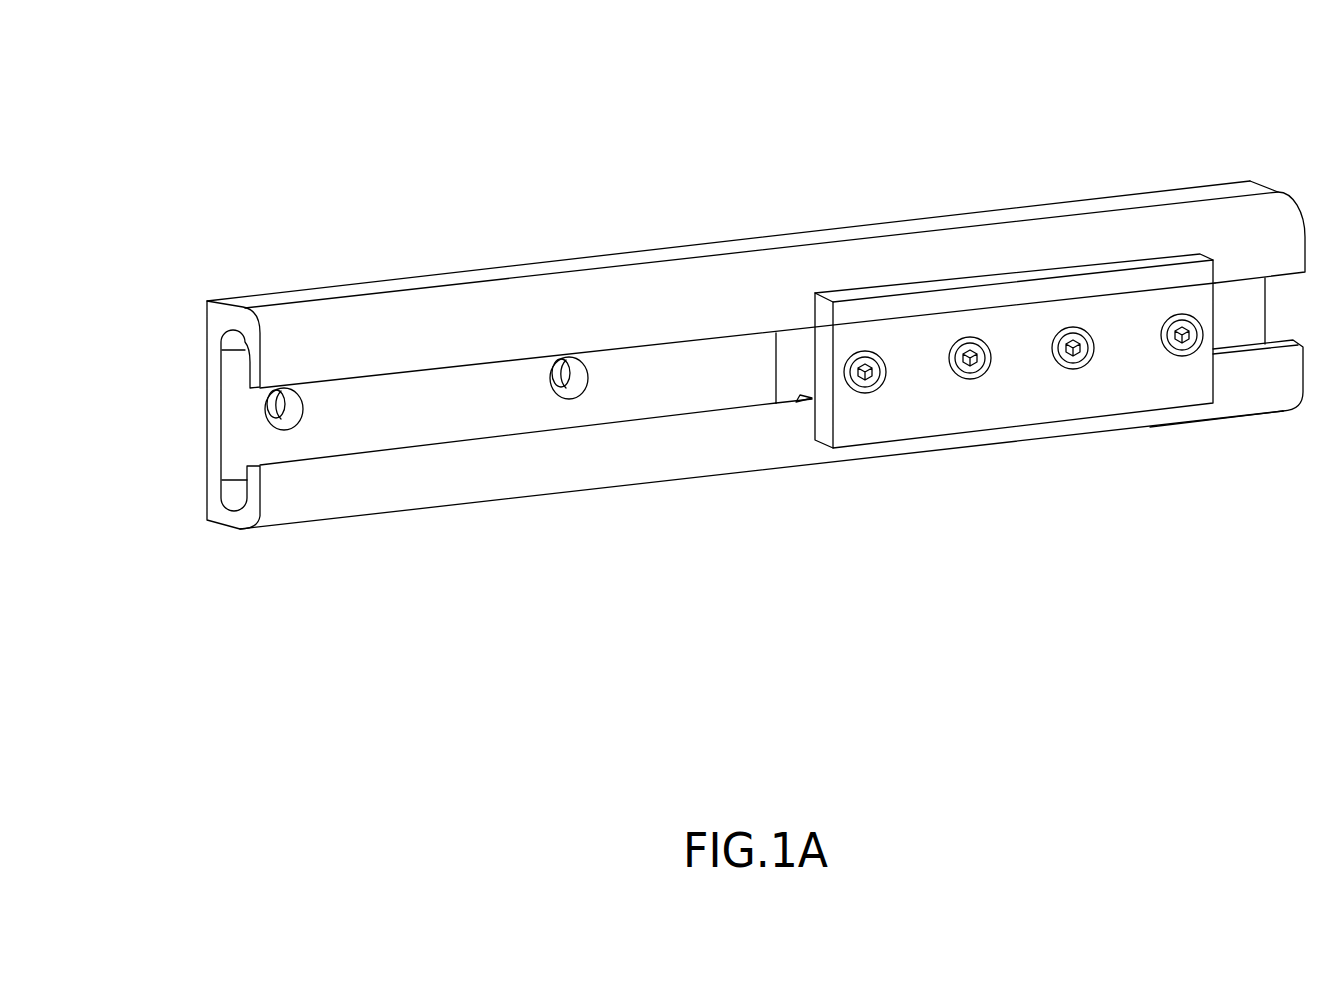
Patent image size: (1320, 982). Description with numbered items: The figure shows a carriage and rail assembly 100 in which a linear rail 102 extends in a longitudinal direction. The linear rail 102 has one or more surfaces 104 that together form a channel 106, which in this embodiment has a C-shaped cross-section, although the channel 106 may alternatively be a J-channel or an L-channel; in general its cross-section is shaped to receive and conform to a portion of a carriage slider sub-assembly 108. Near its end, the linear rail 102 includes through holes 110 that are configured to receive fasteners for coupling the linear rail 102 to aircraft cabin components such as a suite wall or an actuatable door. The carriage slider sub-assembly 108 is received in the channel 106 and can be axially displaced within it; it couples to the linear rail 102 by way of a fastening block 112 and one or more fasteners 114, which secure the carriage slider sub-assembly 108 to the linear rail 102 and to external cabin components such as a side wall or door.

The carriage and rail assembly 100 is at (193, 83).
The linear rail 102 is at (178, 264).
The surfaces 104 is at (262, 322).
The channel 106 is at (247, 435).
The carriage slider sub-assembly 108 is at (1175, 426).
The through holes 110 is at (575, 392).
The fastening block 112 is at (892, 422).
The fasteners 114 is at (973, 374).